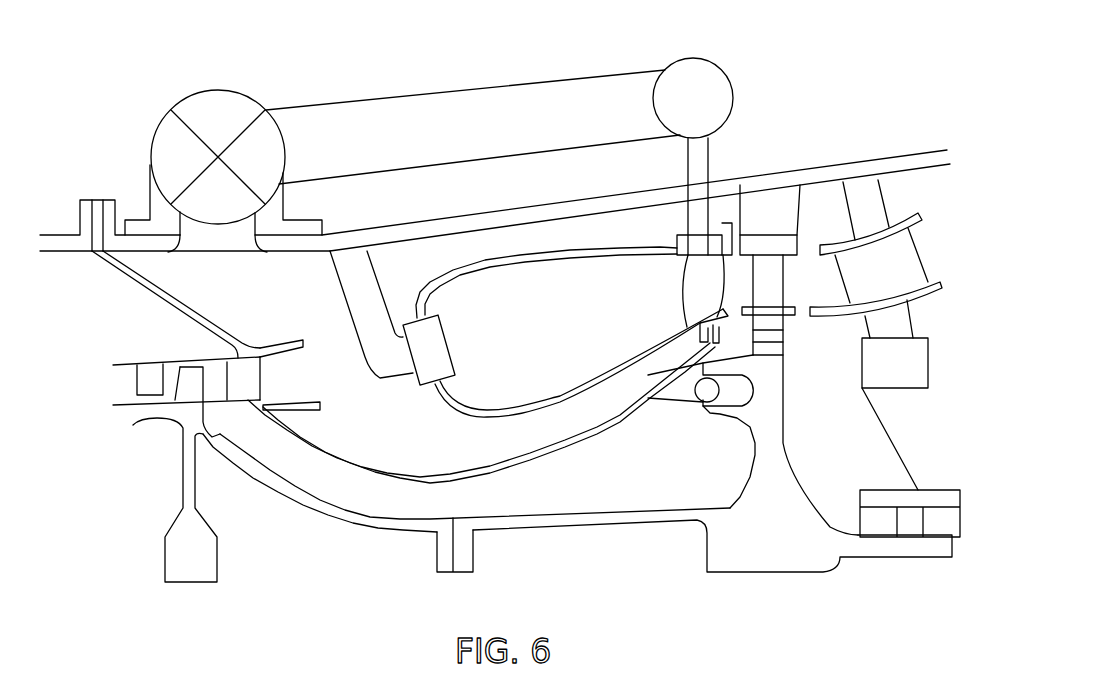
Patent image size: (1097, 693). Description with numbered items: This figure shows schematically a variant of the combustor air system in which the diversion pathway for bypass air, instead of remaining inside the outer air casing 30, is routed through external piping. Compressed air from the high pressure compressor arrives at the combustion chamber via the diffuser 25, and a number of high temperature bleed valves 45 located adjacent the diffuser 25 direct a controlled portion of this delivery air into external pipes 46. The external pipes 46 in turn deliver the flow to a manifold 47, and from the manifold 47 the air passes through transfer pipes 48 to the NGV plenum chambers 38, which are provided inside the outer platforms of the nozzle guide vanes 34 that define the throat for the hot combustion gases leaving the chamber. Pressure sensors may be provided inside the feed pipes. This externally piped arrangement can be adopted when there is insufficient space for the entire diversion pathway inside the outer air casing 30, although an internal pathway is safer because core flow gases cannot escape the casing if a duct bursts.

The diffuser 25 is at (278, 344).
The outer air casing 30 is at (470, 215).
The nozzle guide vanes 34 is at (693, 298).
The NGV plenum chambers 38 is at (705, 249).
The high temperature bleed valves 45 is at (205, 91).
The external pipes 46 is at (455, 91).
The manifold 47 is at (690, 59).
The transfer pipes 48 is at (710, 160).